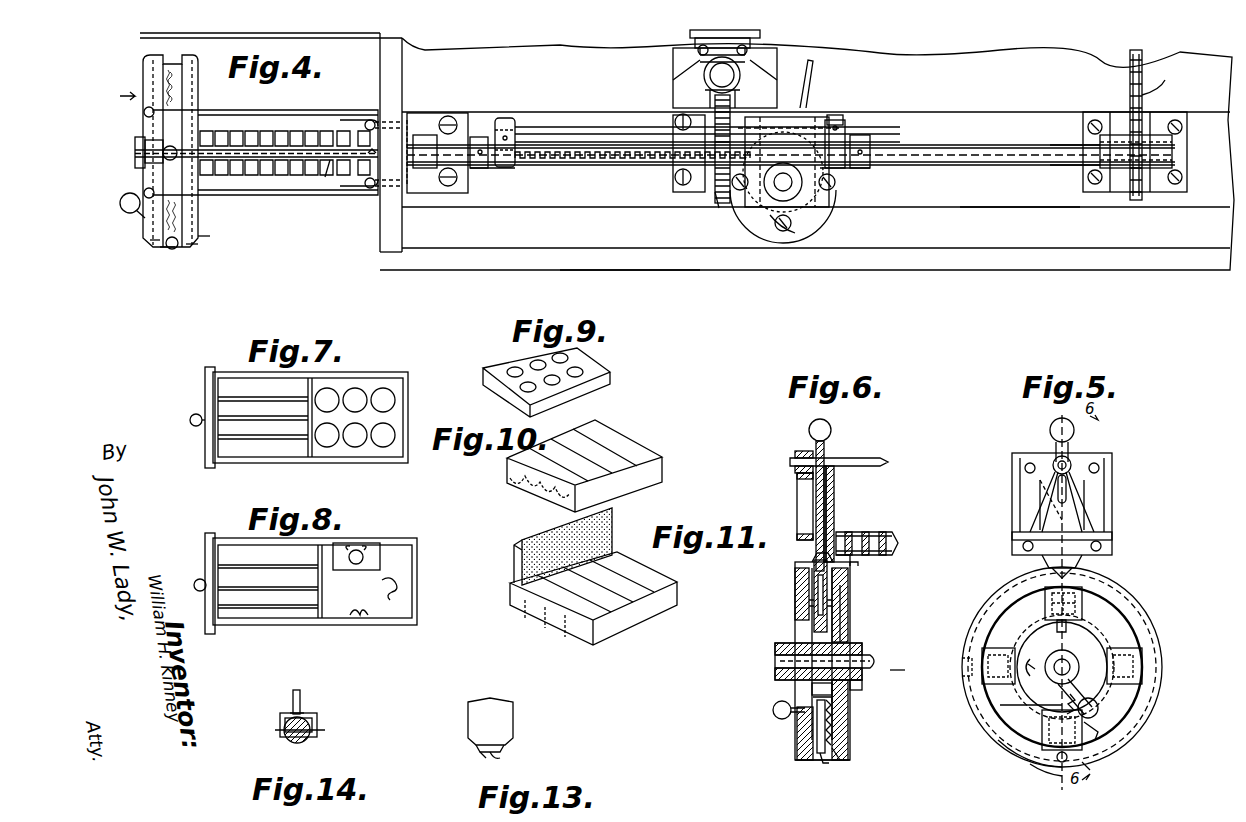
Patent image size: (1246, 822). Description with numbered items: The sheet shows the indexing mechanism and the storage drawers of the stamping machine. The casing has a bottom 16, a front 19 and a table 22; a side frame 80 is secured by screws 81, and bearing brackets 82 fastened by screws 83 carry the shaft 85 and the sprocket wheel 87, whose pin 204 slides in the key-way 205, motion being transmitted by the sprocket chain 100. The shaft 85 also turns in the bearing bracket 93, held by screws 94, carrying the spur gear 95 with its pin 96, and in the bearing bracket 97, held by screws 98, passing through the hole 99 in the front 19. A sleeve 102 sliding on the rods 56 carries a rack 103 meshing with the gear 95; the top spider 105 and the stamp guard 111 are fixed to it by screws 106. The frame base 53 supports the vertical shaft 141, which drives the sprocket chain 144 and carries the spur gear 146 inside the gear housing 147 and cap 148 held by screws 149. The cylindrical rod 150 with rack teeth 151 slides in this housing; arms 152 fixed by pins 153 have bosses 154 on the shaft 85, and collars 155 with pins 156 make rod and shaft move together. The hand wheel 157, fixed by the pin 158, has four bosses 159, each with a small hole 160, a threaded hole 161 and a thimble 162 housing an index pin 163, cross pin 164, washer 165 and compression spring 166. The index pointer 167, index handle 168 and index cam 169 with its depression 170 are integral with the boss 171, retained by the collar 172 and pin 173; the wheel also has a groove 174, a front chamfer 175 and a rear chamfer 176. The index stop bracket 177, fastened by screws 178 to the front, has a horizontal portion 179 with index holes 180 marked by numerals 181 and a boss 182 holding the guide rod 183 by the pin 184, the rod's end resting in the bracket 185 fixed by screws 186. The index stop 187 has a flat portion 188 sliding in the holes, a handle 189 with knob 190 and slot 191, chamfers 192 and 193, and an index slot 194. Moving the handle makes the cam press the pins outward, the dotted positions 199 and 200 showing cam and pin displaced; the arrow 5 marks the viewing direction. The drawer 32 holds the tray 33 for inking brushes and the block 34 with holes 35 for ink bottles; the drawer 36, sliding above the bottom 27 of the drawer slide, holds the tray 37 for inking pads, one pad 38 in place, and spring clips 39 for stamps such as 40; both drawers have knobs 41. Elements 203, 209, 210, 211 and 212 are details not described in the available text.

In FIG. 4, the arrow 5 is at (120, 97).
In FIG. 4, the bottom 16 is at (807, 154).
In FIG. 4, the front 19 is at (392, 240).
In FIG. 4, the table 22 is at (150, 40).
In FIG. 4, the bottom of drawer slide 27 is at (660, 270).
In FIG. 7, the drawer 32 is at (405, 374).
In FIG. 7, the tray 33 is at (280, 388).
In FIG. 10, the tray 33 is at (600, 422).
In FIG. 7, the block 34 is at (398, 400).
In FIG. 9, the block 34 is at (610, 378).
In FIG. 7, the holes 35 is at (390, 432).
In FIG. 9, the holes 35 is at (512, 368).
In FIG. 8, the drawer 36 is at (415, 540).
In FIG. 8, the tray 37 is at (292, 612).
In FIG. 11, the tray 37 is at (677, 588).
In FIG. 11, the inking pad 38 is at (515, 575).
In FIG. 8, the spring clips 39 is at (400, 582).
In FIG. 8, the stamp 40 is at (370, 545).
In FIG. 7, the knobs 41 is at (194, 414).
In FIG. 8, the knobs 41 is at (205, 600).
In FIG. 4, the frame base 53 is at (700, 58).
In FIG. 4, the rods 56 is at (705, 78).
In FIG. 4, the side frame 80 is at (1020, 194).
In FIG. 4, the screws 81 is at (448, 110).
In FIG. 4, the bearing brackets 82 is at (1158, 120).
In FIG. 4, the screws 83 is at (1182, 128).
In FIG. 4, the shaft 85 is at (965, 145).
In FIG. 6, the shaft 85 is at (878, 660).
In FIG. 5, the shaft 85 is at (1080, 663).
In FIG. 4, the sprocket wheel 87 is at (1158, 79).
In FIG. 4, the bearing bracket 93 is at (690, 192).
In FIG. 4, the screws 94 is at (675, 178).
In FIG. 4, the spur gear 95 is at (721, 206).
In FIG. 4, the pin 96 is at (731, 110).
In FIG. 4, the bearing bracket 97 is at (470, 178).
In FIG. 4, the screws 98 is at (458, 180).
In FIG. 4, the hole 99 is at (391, 142).
In FIG. 4, the sprocket chain 100 is at (1128, 72).
In FIG. 4, the sleeve 102 is at (778, 75).
In FIG. 4, the rack 103 is at (705, 95).
In FIG. 4, the top spider 105 is at (762, 35).
In FIG. 4, the screws 106 is at (695, 58).
In FIG. 4, the stamp guard 111 is at (695, 46).
In FIG. 4, the shaft 141 is at (805, 182).
In FIG. 4, the sprocket chain 144 is at (810, 95).
In FIG. 4, the spur gear 146 is at (830, 210).
In FIG. 4, the gear housing 147 is at (815, 212).
In FIG. 4, the cap 148 is at (800, 228).
In FIG. 4, the screws 149 is at (775, 230).
In FIG. 4, the cylindrical rod 150 is at (590, 127).
In FIG. 4, the rack teeth 151 is at (605, 166).
In FIG. 4, the arms 152 is at (512, 122).
In FIG. 4, the pins 153 is at (520, 130).
In FIG. 4, the bosses 154 is at (518, 170).
In FIG. 4, the collars 155 is at (492, 125).
In FIG. 4, the pins 156 is at (480, 135).
In FIG. 4, the hand wheel 157 is at (200, 232).
In FIG. 6, the hand wheel 157 is at (850, 603).
In FIG. 5, the hand wheel 157 is at (1035, 768).
In FIG. 6, the pin 158 is at (862, 685).
In FIG. 6, the bosses 159 is at (795, 608).
In FIG. 5, the bosses 159 is at (1085, 605).
In FIG. 6, the small cylindrical hole 160 is at (848, 715).
In FIG. 6, the larger cylindrical hole 161 is at (835, 733).
In FIG. 6, the threaded thimble 162 is at (842, 757).
In FIG. 5, the threaded thimble 162 is at (1095, 770).
In FIG. 4, the index pin 163 is at (150, 244).
In FIG. 6, the index pin 163 is at (823, 763).
In FIG. 5, the index pin 163 is at (1054, 627).
In FIG. 6, the cross pin 164 is at (815, 700).
In FIG. 5, the cross pin 164 is at (1070, 754).
In FIG. 6, the washer 165 is at (817, 722).
In FIG. 4, the compression spring 166 is at (146, 80).
In FIG. 6, the compression spring 166 is at (810, 760).
In FIG. 5, the compression spring 166 is at (1000, 748).
In FIG. 4, the index pointer 167 is at (140, 222).
In FIG. 6, the index pointer 167 is at (790, 712).
In FIG. 5, the index pointer 167 is at (1082, 720).
In FIG. 4, the index handle 168 is at (128, 212).
In FIG. 6, the index handle 168 is at (773, 708).
In FIG. 5, the index handle 168 is at (1100, 710).
In FIG. 6, the index cam 169 is at (812, 689).
In FIG. 5, the index cam 169 is at (1097, 704).
In FIG. 5, the central depression 170 is at (1100, 738).
In FIG. 6, the boss 171 is at (790, 643).
In FIG. 6, the collar 172 is at (775, 650).
In FIG. 5, the collar 172 is at (1000, 705).
In FIG. 6, the pin 173 is at (775, 660).
In FIG. 5, the pin 173 is at (1110, 658).
In FIG. 4, the groove 174 is at (168, 250).
In FIG. 6, the groove 174 is at (812, 559).
In FIG. 5, the groove 174 is at (975, 628).
In FIG. 4, the front chamfer 175 is at (165, 250).
In FIG. 6, the front chamfer 175 is at (813, 567).
In FIG. 5, the front chamfer 175 is at (1130, 612).
In FIG. 4, the rear chamfer 176 is at (195, 247).
In FIG. 6, the rear chamfer 176 is at (850, 568).
In FIG. 4, the index stop bracket 177 is at (370, 118).
In FIG. 5, the index stop bracket 177 is at (1100, 492).
In FIG. 4, the screws 178 is at (360, 117).
In FIG. 5, the screws 178 is at (1100, 467).
In FIG. 4, the horizontal portion 179 is at (250, 112).
In FIG. 6, the horizontal portion 179 is at (898, 538).
In FIG. 4, the index holes 180 is at (320, 177).
In FIG. 6, the index holes 180 is at (870, 532).
In FIG. 4, the numerals 181 is at (292, 115).
In FIG. 4, the boss 182 is at (370, 180).
In FIG. 4, the index stop guide rod 183 is at (278, 160).
In FIG. 6, the index stop guide rod 183 is at (885, 460).
In FIG. 5, the index stop guide rod 183 is at (1070, 462).
In FIG. 4, the pin 184 is at (335, 180).
In FIG. 4, the bracket 185 is at (138, 155).
In FIG. 6, the bracket 185 is at (797, 500).
In FIG. 5, the bracket 185 is at (1056, 498).
In FIG. 4, the screws 186 is at (145, 113).
In FIG. 5, the screws 186 is at (1112, 522).
In FIG. 5, the index stop 187 is at (1085, 500).
In FIG. 6, the flat portion 188 is at (832, 516).
In FIG. 5, the flat portion 188 is at (1012, 537).
In FIG. 13, the flat portion 188 is at (490, 721).
In FIG. 6, the handle 189 is at (826, 452).
In FIG. 5, the handle 189 is at (1056, 450).
In FIG. 6, the knob 190 is at (808, 432).
In FIG. 5, the knob 190 is at (1050, 432).
In FIG. 6, the slot 191 is at (835, 498).
In FIG. 5, the slot 191 is at (1045, 490).
In FIG. 5, the chamfers 192 is at (1045, 563).
In FIG. 13, the chamfers 192 is at (470, 750).
In FIG. 6, the chamfers 193 is at (809, 600).
In FIG. 13, the chamfers 193 is at (482, 755).
In FIG. 5, the index slot 194 is at (1055, 572).
In FIG. 13, the index slot 194 is at (500, 758).
In FIG. 5, the dotted cam position 199 is at (1035, 653).
In FIG. 6, the dotted pin position 200 is at (908, 667).
In FIG. 5, the dotted pin position 200 is at (962, 667).
In FIG. 14, the roller 203 is at (308, 740).
In FIG. 4, the pin 204 is at (1175, 160).
In FIG. 4, the key-way 205 is at (1055, 134).
In FIG. 14, the frame 209 is at (280, 728).
In FIG. 14, the axis 210 is at (317, 730).
In FIG. 14, the plate 211 is at (305, 712).
In FIG. 14, the pin 212 is at (300, 695).